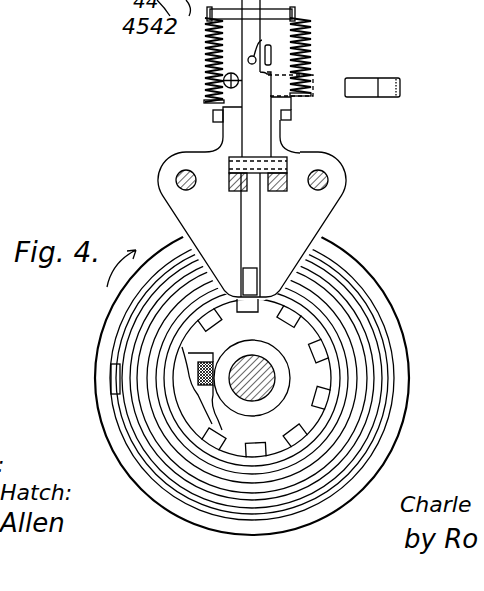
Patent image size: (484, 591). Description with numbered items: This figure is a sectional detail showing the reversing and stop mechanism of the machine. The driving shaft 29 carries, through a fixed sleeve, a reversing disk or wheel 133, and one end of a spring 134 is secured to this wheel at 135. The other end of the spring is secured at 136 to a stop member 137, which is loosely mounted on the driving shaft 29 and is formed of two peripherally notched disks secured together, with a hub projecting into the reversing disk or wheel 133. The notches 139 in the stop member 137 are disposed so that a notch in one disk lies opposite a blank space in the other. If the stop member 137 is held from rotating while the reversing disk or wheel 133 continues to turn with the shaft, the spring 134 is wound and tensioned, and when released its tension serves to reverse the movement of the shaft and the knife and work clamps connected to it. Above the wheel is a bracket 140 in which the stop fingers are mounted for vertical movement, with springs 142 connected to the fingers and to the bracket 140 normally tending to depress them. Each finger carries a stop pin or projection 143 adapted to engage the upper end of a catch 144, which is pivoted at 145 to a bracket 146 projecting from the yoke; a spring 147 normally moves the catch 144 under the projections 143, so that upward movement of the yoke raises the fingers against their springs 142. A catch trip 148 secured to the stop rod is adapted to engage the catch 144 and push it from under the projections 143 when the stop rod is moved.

The driving shaft 29 is at (253, 404).
The reversing disk or wheel 133 is at (395, 306).
The spring 134 is at (147, 445).
The point of securement of spring to reversing disk 135 is at (114, 380).
The point of securement of spring to stop member 136 is at (199, 374).
The stop member 137 is at (292, 412).
The notches 139 is at (294, 320).
The bracket 140 is at (320, 208).
The springs 142 is at (205, 57).
The stop pin or projection 143 is at (270, 56).
The catch 144 is at (266, 132).
The pivot 145 is at (222, 165).
The bracket 146 is at (229, 183).
The spring 147 is at (222, 83).
The catch trip 148 is at (385, 78).